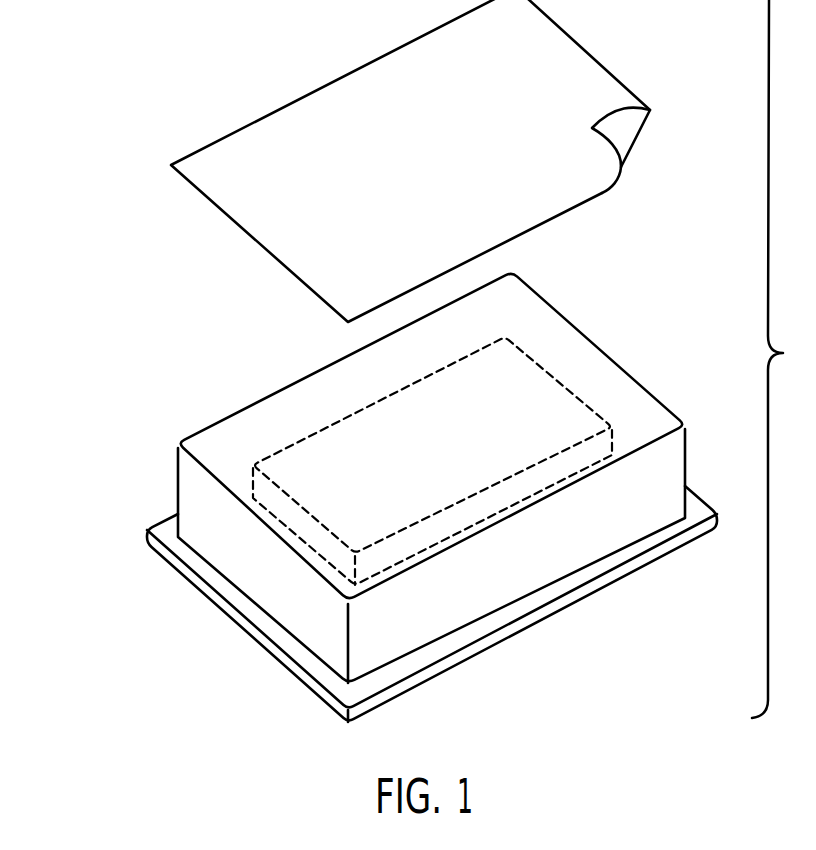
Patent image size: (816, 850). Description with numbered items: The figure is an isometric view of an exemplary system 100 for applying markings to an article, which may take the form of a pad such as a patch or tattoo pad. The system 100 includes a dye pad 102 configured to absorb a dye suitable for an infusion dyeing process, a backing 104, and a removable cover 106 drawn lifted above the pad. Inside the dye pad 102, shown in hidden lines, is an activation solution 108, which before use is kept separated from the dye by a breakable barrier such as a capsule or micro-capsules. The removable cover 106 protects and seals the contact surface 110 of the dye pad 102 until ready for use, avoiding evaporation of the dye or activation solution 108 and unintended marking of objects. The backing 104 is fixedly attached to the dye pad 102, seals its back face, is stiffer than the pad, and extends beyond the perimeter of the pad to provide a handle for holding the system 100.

The system for applying markings to an article 100 is at (128, 76).
The dye pad 102 is at (628, 548).
The backing 104 is at (190, 577).
The removable cover 106 is at (589, 56).
The activation solution 108 is at (450, 538).
The contact surface 110 is at (580, 362).